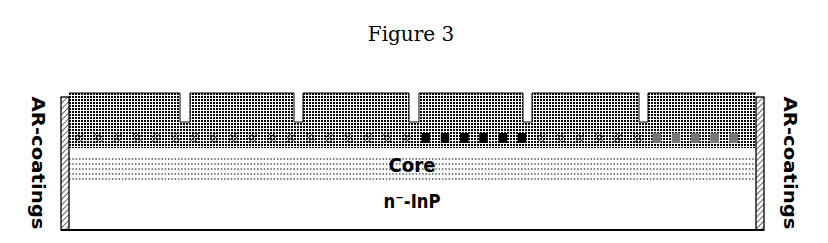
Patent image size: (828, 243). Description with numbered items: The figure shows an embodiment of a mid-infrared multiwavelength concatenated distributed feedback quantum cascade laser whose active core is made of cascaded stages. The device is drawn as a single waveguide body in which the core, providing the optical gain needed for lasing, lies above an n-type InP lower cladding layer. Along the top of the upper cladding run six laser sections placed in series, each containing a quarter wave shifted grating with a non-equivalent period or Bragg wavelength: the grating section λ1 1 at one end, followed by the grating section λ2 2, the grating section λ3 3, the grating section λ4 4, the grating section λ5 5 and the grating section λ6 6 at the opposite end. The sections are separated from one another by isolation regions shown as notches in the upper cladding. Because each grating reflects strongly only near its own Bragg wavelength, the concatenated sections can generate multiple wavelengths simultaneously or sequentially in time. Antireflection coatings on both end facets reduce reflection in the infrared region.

The grating section λ 1 is at (696, 127).
The grating section λ 2 is at (589, 127).
The grating section λ 3 is at (474, 127).
The grating section λ 4 is at (358, 127).
The grating section λ 5 is at (243, 127).
The grating section λ 6 is at (127, 127).